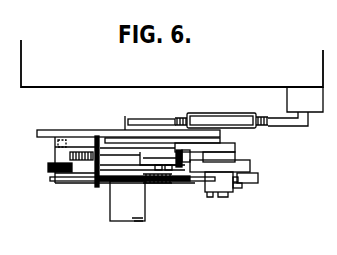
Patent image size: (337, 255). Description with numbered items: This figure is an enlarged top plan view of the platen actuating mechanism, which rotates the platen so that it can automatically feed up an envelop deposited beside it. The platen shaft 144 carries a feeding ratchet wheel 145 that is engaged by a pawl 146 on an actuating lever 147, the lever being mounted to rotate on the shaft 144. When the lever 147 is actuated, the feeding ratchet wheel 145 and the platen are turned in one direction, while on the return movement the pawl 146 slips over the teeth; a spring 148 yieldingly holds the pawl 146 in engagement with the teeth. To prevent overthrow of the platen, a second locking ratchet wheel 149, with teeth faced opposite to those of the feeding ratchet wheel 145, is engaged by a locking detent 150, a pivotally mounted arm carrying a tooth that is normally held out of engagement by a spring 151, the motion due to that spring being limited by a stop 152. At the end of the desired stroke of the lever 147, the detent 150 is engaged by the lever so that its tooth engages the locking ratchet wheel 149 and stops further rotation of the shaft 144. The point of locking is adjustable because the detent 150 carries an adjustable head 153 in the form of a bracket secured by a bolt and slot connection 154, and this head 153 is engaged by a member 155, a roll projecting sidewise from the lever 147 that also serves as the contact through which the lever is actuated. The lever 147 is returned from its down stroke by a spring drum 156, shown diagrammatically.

The shaft 144 is at (127, 201).
The feeding ratchet wheel 145 is at (70, 157).
The pawl 146 is at (122, 155).
The actuating lever 147 is at (235, 148).
The spring 148 is at (176, 166).
The locking ratchet wheel 149 is at (97, 186).
The locking detent 150 is at (90, 166).
The spring 151 is at (49, 171).
The stop 152 is at (88, 181).
The adjustable head 153 is at (258, 179).
The bolt and slot connection 154 is at (240, 193).
The member 155 is at (250, 166).
The spring drum 156 is at (108, 130).